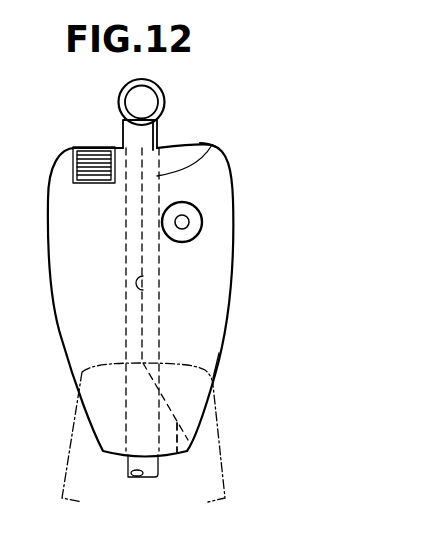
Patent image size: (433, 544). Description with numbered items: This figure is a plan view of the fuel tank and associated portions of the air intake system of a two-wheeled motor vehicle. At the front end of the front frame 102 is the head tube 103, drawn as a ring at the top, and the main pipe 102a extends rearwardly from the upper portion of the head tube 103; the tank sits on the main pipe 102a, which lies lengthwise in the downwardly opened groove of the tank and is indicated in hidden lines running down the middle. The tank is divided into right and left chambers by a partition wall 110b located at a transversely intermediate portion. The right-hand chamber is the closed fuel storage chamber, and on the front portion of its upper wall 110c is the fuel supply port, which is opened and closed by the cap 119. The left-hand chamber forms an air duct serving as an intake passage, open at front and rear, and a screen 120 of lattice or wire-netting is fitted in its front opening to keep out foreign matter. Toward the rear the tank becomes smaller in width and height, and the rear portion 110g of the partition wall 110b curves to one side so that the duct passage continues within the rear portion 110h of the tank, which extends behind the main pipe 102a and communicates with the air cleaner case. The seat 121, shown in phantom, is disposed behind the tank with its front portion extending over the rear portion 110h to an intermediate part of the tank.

The front frame 102 is at (148, 136).
The main pipe 102a is at (214, 146).
The head tube 103 is at (164, 93).
The partition wall 110b is at (146, 290).
The upper wall 110c is at (215, 178).
The rear portion of the partition wall 110g is at (183, 458).
The rear portion of the tank 110h is at (113, 447).
The cap 119 is at (190, 222).
The screen 120 is at (92, 158).
The seat 121 is at (222, 420).